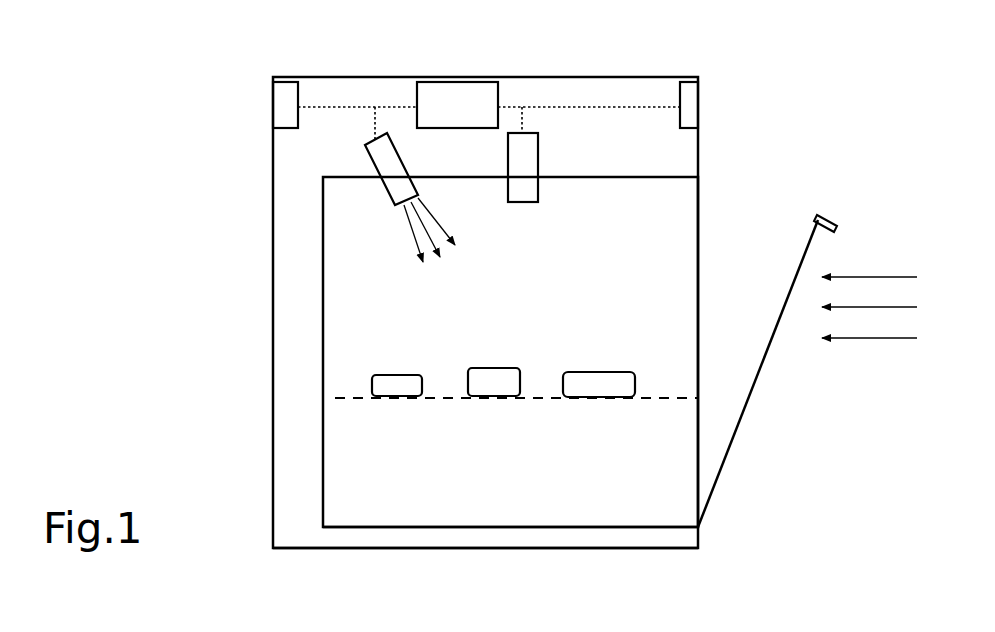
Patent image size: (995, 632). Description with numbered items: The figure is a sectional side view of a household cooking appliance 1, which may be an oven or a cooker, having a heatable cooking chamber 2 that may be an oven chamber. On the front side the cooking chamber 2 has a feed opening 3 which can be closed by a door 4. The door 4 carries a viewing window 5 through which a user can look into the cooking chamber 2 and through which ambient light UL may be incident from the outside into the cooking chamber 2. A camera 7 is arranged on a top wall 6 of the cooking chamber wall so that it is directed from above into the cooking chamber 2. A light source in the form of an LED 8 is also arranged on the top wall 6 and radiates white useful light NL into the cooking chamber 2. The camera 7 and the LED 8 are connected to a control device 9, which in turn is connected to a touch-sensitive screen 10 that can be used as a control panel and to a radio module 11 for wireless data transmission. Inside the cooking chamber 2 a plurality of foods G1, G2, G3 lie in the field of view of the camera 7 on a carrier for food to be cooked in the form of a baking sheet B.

The household cooking appliance 1 is at (178, 205).
The cooking chamber 2 is at (481, 527).
The feed opening 3 is at (712, 210).
The door 4 is at (832, 218).
The viewing window 5 is at (770, 404).
The top wall 6 is at (646, 177).
The camera 7 is at (540, 163).
The LED 8 is at (362, 160).
The control device 9 is at (460, 93).
The touch-sensitive screen 10 is at (690, 90).
The radio module 11 is at (288, 82).
The useful light NL is at (410, 232).
The baking sheet B is at (443, 402).
The food G1 is at (397, 375).
The food G2 is at (497, 368).
The food G3 is at (575, 372).
The ambient light UL is at (897, 272).